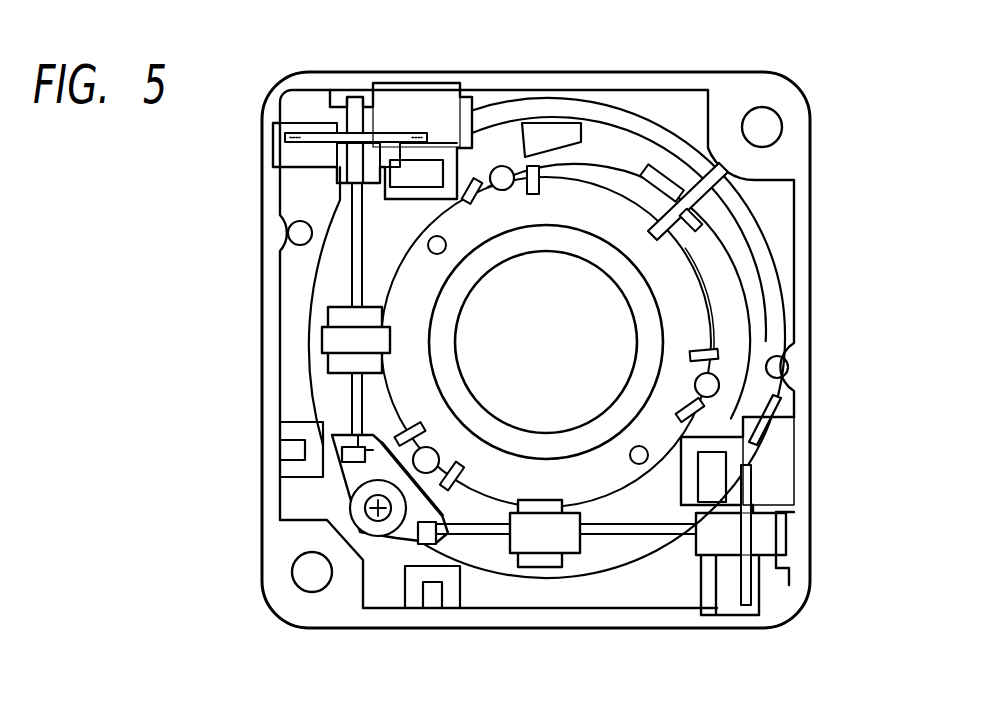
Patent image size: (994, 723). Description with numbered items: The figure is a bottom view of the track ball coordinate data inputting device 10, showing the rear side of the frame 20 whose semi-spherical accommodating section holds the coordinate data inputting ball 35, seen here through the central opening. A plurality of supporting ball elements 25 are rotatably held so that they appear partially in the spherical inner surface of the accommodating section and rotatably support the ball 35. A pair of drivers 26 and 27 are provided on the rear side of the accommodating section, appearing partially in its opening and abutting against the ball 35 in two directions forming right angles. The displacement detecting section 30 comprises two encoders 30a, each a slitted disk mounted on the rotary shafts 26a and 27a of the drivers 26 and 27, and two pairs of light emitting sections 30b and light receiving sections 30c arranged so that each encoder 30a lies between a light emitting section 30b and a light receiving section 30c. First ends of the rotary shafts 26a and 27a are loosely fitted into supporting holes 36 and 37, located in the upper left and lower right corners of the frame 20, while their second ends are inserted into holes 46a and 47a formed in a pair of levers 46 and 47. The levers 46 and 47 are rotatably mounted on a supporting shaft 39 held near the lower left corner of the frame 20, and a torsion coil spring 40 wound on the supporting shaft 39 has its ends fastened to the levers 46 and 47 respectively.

The track ball coordinate data inputting device 10 is at (714, 69).
The frame 20 is at (672, 82).
The supporting ball elements 25 is at (503, 168).
The driver 26 is at (330, 340).
The rotary shaft 26a is at (352, 265).
The driver 27 is at (540, 568).
The rotary shaft 27a is at (617, 540).
The displacement detecting section 30 is at (312, 112).
The encoder 30a is at (286, 137).
The light emitting section 30b is at (412, 165).
The light receiving section 30c is at (428, 100).
The coordinate data inputting ball 35 is at (565, 270).
The supporting hole 36 is at (338, 95).
The supporting hole 37 is at (783, 555).
The supporting shaft 39 is at (365, 525).
The torsion coil spring 40 is at (345, 440).
The lever 46 is at (347, 478).
The hole 46a is at (388, 390).
The lever 47 is at (428, 545).
The hole 47a is at (432, 592).